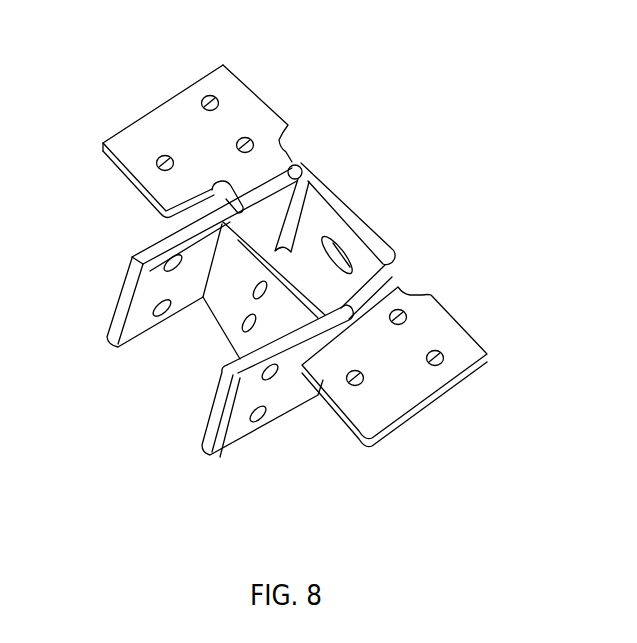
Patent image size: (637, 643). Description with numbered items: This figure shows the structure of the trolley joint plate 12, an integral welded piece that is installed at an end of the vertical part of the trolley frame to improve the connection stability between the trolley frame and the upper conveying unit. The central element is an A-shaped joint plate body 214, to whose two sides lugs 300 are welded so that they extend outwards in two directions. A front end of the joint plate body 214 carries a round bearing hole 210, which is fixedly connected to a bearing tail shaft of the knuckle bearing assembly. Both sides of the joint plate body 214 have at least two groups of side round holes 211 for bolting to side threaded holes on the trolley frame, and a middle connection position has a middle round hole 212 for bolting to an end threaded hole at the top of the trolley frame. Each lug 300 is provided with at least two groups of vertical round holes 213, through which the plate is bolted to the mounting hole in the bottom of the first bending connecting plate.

The lug 300 is at (195, 147).
The trolley joint plate 12 is at (266, 299).
The joint plate body 214 is at (380, 214).
The round bearing hole 210 is at (346, 250).
The side round hole 211 is at (164, 310).
The middle round hole 212 is at (249, 323).
The vertical round hole 213 is at (435, 358).